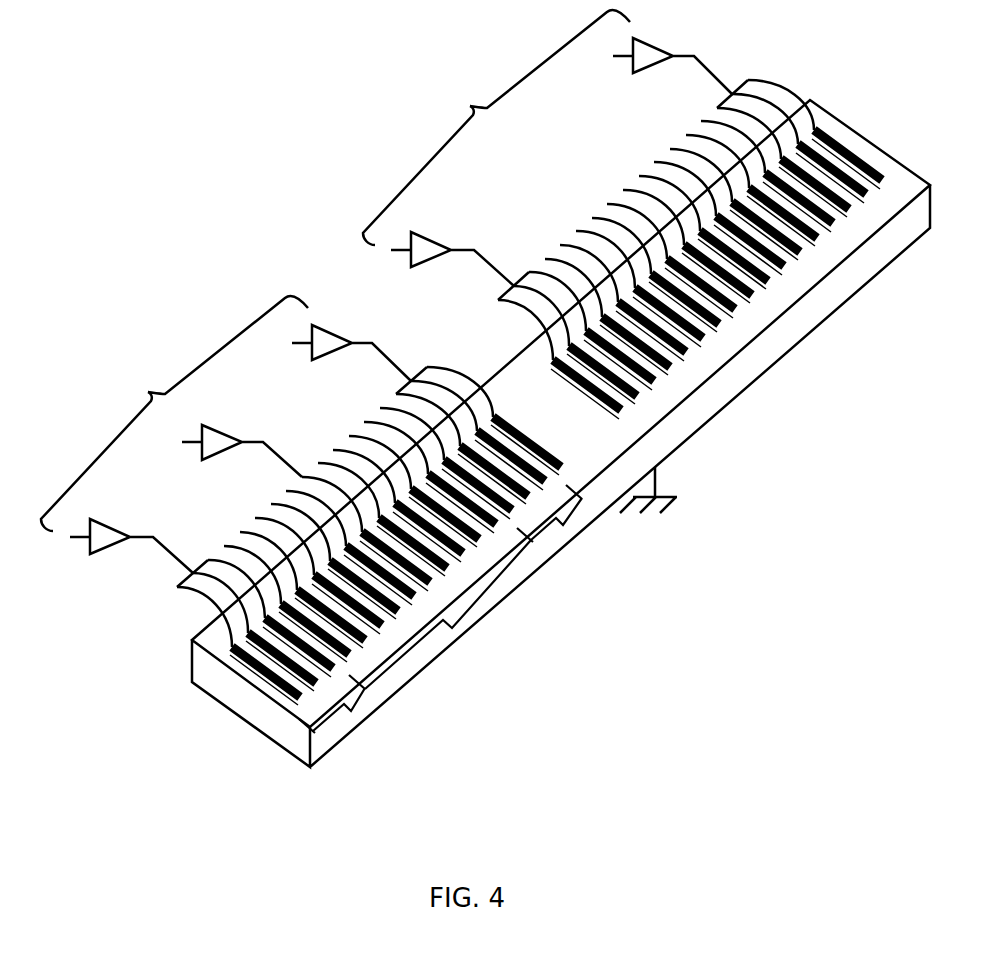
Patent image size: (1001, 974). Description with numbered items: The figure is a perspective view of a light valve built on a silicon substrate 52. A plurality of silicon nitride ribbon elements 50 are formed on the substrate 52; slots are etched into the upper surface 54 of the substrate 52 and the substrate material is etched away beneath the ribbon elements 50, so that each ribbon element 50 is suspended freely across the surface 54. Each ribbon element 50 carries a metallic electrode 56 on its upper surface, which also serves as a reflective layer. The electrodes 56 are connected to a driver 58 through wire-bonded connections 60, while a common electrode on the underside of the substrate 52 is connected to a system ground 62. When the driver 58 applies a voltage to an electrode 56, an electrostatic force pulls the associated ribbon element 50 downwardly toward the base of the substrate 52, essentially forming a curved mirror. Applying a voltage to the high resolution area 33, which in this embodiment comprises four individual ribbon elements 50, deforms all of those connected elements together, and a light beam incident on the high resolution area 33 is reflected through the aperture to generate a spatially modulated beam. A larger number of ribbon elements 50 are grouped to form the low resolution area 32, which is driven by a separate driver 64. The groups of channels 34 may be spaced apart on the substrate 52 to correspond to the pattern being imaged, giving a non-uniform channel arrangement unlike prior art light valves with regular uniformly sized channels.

The low resolution area 32 is at (448, 614).
The high resolution area 33 is at (456, 613).
The groups of channels 34 is at (386, 270).
The ribbon element 50 is at (637, 397).
The silicon substrate 52 is at (240, 703).
The upper surface 54 is at (515, 383).
The metallic electrode 56 is at (719, 324).
The driver 58 is at (110, 519).
The wire-bonded connections 60 is at (177, 588).
The system ground 62 is at (662, 492).
The driver 64 is at (220, 425).